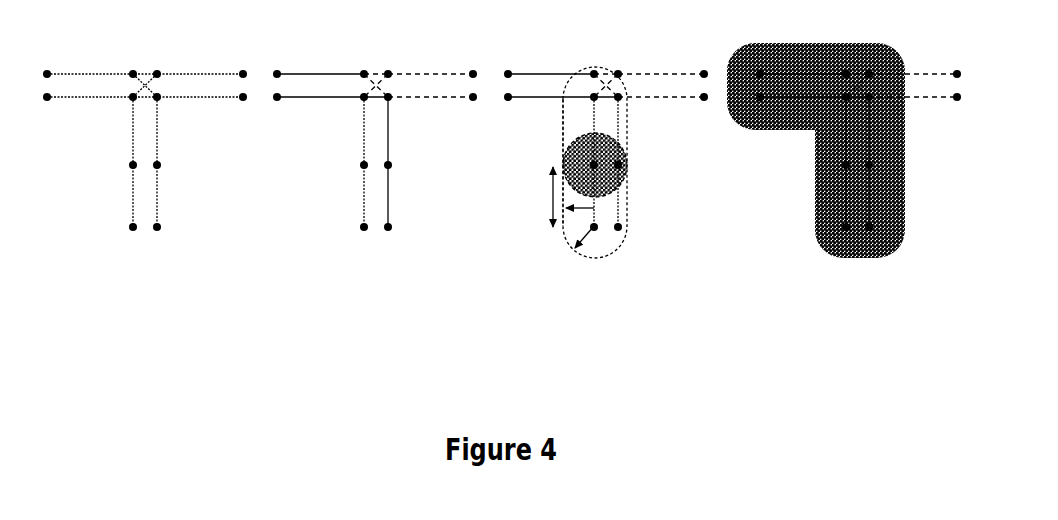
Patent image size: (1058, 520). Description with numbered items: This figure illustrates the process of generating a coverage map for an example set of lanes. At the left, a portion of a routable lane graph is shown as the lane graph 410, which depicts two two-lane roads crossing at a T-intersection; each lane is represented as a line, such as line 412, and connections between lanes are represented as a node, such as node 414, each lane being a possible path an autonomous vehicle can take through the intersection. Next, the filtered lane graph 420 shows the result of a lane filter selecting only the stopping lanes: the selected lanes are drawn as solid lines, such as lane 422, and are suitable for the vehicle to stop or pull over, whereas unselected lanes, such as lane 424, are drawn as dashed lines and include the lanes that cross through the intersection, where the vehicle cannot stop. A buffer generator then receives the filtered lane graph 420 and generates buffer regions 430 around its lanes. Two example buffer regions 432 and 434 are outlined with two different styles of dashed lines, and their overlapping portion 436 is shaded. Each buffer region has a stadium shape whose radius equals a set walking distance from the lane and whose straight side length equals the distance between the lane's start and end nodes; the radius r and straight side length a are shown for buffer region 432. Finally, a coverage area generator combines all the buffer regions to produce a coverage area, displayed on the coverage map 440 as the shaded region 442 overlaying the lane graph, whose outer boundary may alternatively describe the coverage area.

The lane graph 410 is at (145, 172).
The line 412 is at (75, 66).
The node 414 is at (160, 66).
The filtered lane graph 420 is at (377, 179).
The lane 422 is at (306, 66).
The lane 424 is at (411, 66).
The buffer regions 430 is at (601, 188).
The buffer region 432 is at (638, 190).
The buffer region 434 is at (638, 120).
The overlapping portion 436 is at (574, 156).
The coverage map 440 is at (844, 169).
The shaded region 442 is at (809, 31).